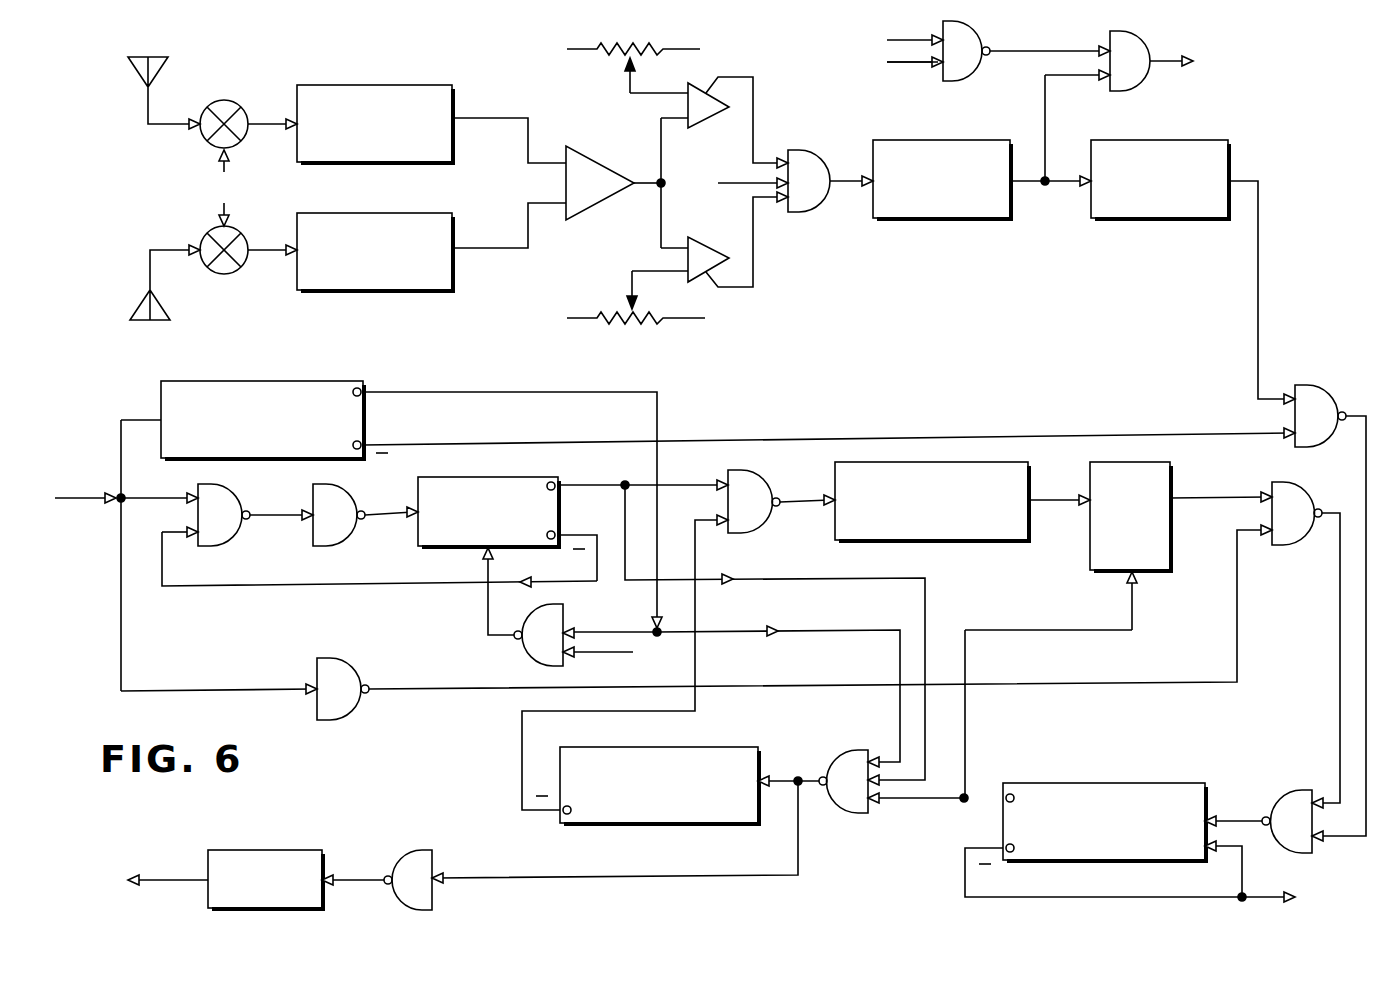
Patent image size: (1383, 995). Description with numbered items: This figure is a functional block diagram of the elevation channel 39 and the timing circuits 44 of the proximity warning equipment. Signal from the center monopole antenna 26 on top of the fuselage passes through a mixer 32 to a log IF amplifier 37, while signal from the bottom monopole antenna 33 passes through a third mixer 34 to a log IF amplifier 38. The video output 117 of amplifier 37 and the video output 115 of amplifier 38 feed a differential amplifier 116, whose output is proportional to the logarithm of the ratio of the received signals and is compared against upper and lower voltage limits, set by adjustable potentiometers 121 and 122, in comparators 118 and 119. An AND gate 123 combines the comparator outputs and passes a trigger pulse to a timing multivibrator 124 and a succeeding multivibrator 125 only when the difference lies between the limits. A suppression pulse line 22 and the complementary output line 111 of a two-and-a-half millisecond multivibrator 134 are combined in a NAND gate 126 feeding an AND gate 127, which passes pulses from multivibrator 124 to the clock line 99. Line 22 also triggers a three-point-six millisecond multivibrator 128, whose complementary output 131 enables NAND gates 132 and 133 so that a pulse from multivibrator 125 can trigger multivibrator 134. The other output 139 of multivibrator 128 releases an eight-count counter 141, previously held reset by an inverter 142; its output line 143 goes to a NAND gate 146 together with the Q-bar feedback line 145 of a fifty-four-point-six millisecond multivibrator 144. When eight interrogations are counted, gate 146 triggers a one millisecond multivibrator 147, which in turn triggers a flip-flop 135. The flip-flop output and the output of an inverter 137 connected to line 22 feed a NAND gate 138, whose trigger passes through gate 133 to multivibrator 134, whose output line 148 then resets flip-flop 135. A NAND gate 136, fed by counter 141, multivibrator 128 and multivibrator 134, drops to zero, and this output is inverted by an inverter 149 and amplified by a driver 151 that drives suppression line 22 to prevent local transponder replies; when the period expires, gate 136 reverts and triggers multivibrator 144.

The suppression pulse line 22 is at (916, 40).
The center monopole antenna 26 is at (130, 74).
The mixer 32 is at (217, 100).
The bottom monopole antenna 33 is at (140, 298).
The third mixer 34 is at (212, 227).
The log IF amplifier 37 is at (368, 83).
The log IF amplifier 38 is at (380, 291).
The elevation channel 39 is at (722, 57).
The timing circuits 44 is at (1030, 253).
The clock line 99 is at (1168, 57).
The complementary output line 111 is at (918, 66).
The video output 115 is at (513, 250).
The differential amplifier 116 is at (593, 212).
The video output 117 is at (487, 118).
The comparator 118 is at (709, 128).
The comparator 119 is at (710, 247).
The adjustable potentiometer 121 is at (576, 52).
The adjustable potentiometer 122 is at (680, 316).
The AND gate 123 is at (812, 148).
The timing multivibrator 124 is at (935, 220).
The succeeding multivibrator 125 is at (1153, 220).
The NAND gate 126 is at (985, 33).
The AND gate 127 is at (1143, 86).
The 3.6 millisecond multivibrator 128 is at (247, 378).
The complementary output 131 is at (783, 438).
The NAND gate 132 is at (1318, 380).
The NAND gate 133 is at (1288, 788).
The 2.5 millisecond multivibrator 134 is at (1110, 780).
The flip-flop 135 is at (1173, 562).
The NAND gate 136 is at (848, 817).
The inverter 137 is at (348, 667).
The NAND gate 138 is at (1295, 545).
The output line 139 is at (658, 403).
The eight-count counter 141 is at (417, 537).
The inverter 142 is at (527, 655).
The counter output line 143 is at (613, 474).
The 54.6 millisecond multivibrator 144 is at (730, 745).
The feedback line 145 is at (518, 723).
The NAND gate 146 is at (753, 532).
The 1 millisecond multivibrator 147 is at (965, 543).
The output line 148 is at (968, 735).
The inverter 149 is at (410, 848).
The driver 151 is at (272, 848).